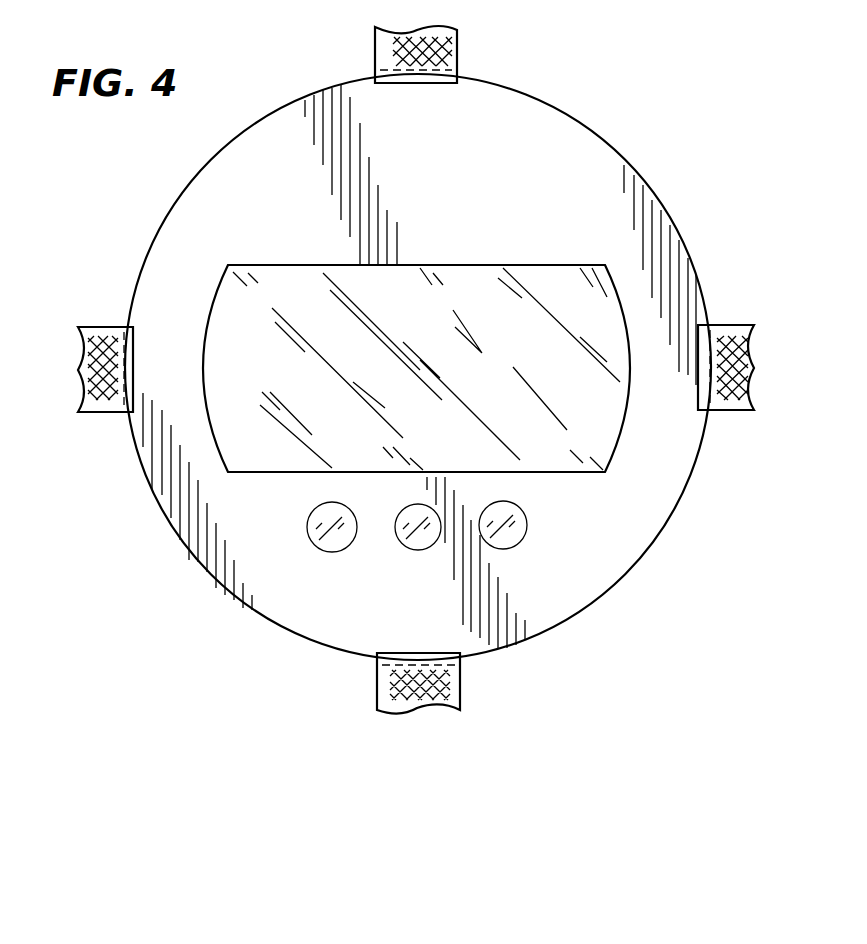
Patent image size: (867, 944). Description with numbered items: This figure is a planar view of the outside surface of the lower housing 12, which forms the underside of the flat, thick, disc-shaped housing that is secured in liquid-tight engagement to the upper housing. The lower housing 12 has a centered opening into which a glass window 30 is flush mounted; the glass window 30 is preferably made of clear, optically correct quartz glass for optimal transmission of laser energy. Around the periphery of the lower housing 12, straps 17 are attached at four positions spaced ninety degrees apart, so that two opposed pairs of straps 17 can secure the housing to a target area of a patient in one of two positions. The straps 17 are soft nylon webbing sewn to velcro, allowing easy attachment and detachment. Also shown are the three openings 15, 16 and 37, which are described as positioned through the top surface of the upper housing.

The lower housing 12 is at (130, 137).
The opening 15 is at (519, 531).
The opening 16 is at (332, 534).
The straps 17 is at (458, 38).
The glass window 30 is at (282, 292).
The opening 37 is at (418, 536).